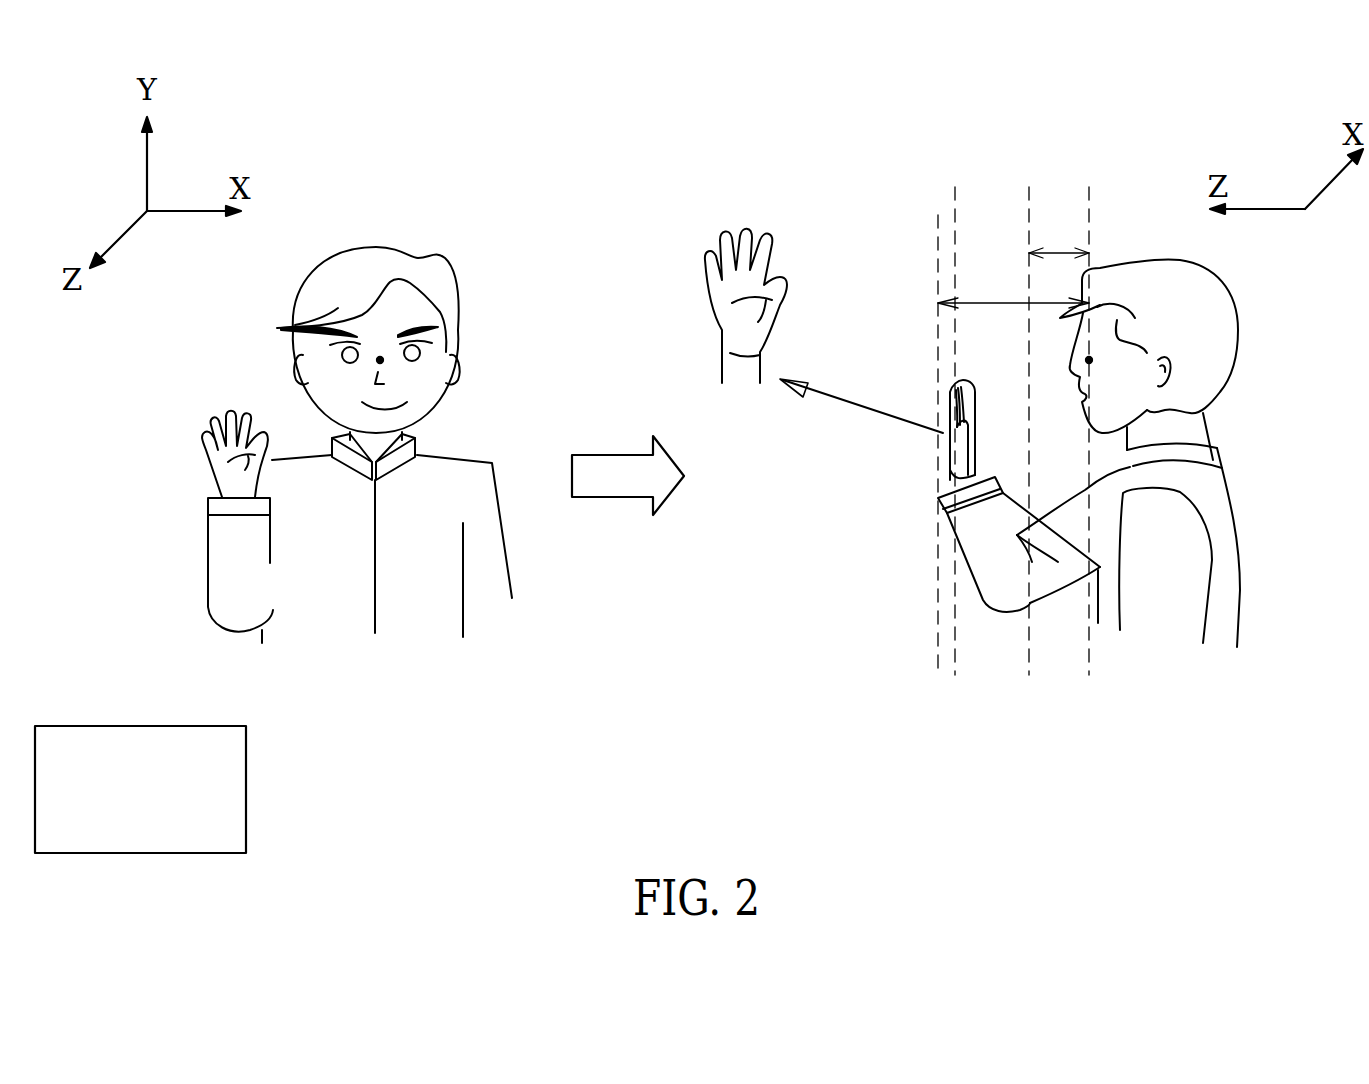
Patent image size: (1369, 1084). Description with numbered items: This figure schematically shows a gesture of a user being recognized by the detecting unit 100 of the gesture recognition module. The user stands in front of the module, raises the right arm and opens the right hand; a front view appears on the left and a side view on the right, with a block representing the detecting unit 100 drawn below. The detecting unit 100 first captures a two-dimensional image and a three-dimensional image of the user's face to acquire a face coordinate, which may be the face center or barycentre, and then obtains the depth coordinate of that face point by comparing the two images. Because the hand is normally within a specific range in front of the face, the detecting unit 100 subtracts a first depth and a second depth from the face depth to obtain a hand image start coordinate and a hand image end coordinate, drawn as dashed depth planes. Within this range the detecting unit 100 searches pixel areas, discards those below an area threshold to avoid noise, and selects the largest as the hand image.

The detecting unit 100 is at (246, 787).